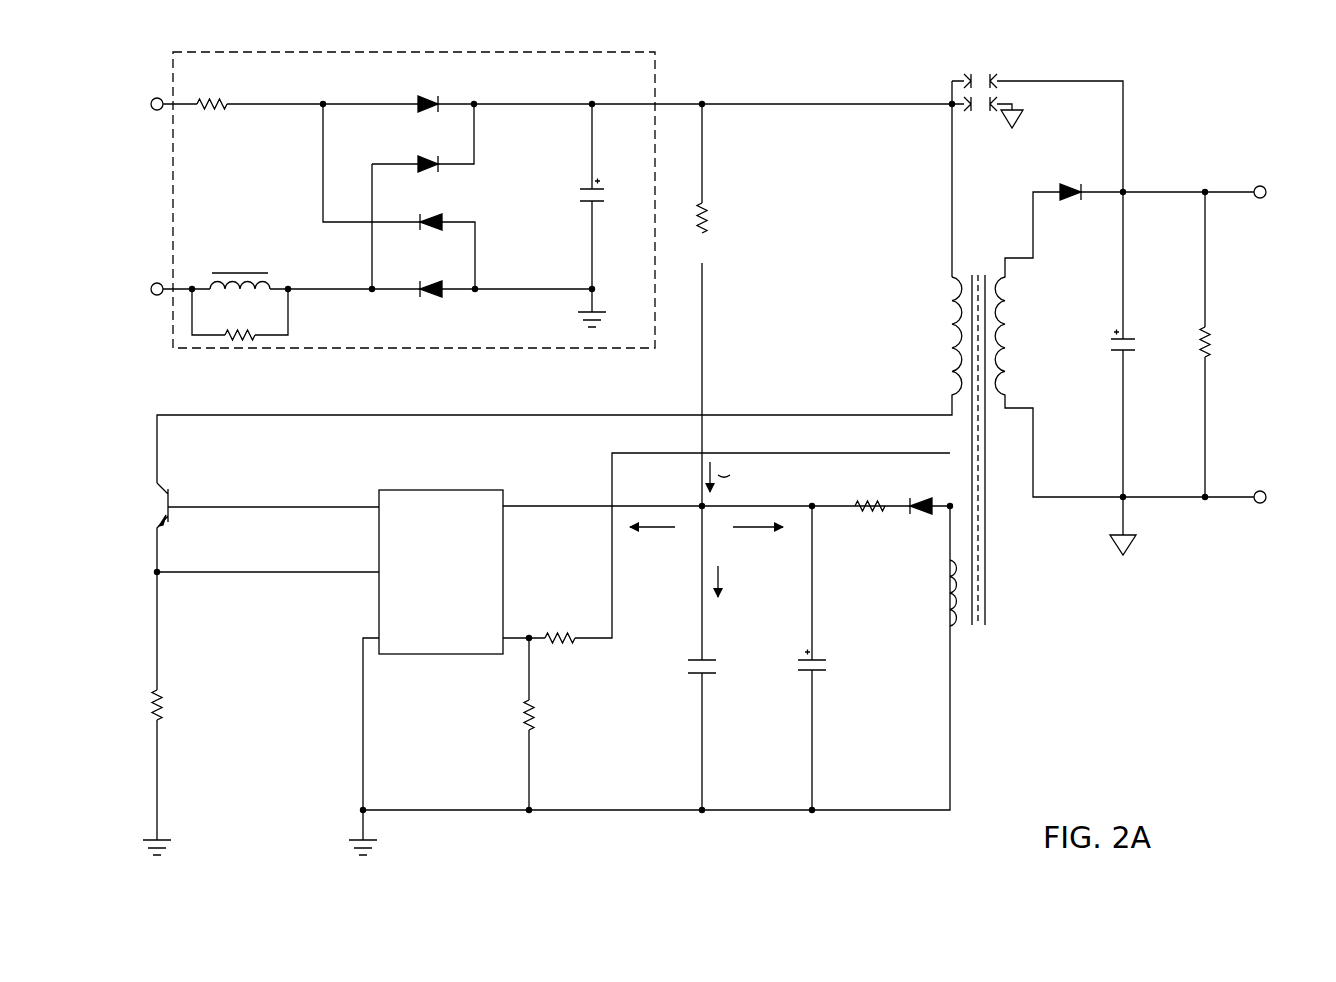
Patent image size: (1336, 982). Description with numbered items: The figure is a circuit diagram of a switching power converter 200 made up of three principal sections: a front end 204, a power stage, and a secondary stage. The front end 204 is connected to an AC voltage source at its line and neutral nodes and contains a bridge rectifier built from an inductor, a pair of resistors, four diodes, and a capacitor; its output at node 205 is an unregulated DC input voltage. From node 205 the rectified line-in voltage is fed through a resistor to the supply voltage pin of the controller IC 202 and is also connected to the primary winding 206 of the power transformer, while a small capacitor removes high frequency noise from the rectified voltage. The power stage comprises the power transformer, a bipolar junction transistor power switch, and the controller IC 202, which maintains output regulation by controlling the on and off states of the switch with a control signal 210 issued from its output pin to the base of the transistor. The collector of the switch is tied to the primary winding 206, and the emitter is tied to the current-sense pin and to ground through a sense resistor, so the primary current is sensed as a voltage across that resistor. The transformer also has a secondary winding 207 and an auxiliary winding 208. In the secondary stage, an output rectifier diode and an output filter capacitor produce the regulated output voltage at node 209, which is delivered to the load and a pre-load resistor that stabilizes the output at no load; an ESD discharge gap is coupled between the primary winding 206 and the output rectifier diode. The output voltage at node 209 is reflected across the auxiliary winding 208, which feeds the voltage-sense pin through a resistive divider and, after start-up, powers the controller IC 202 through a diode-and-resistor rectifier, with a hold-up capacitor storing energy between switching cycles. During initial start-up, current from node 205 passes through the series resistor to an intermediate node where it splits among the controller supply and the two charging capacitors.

The switching power converter 200 is at (698, 447).
The controller IC 202 is at (402, 490).
The front end 204 is at (655, 72).
The node 205 is at (706, 108).
The primary winding 206 is at (953, 292).
The secondary winding 207 is at (1003, 303).
The auxiliary winding 208 is at (952, 592).
The node 209 is at (1205, 190).
The control signal 210 is at (253, 503).